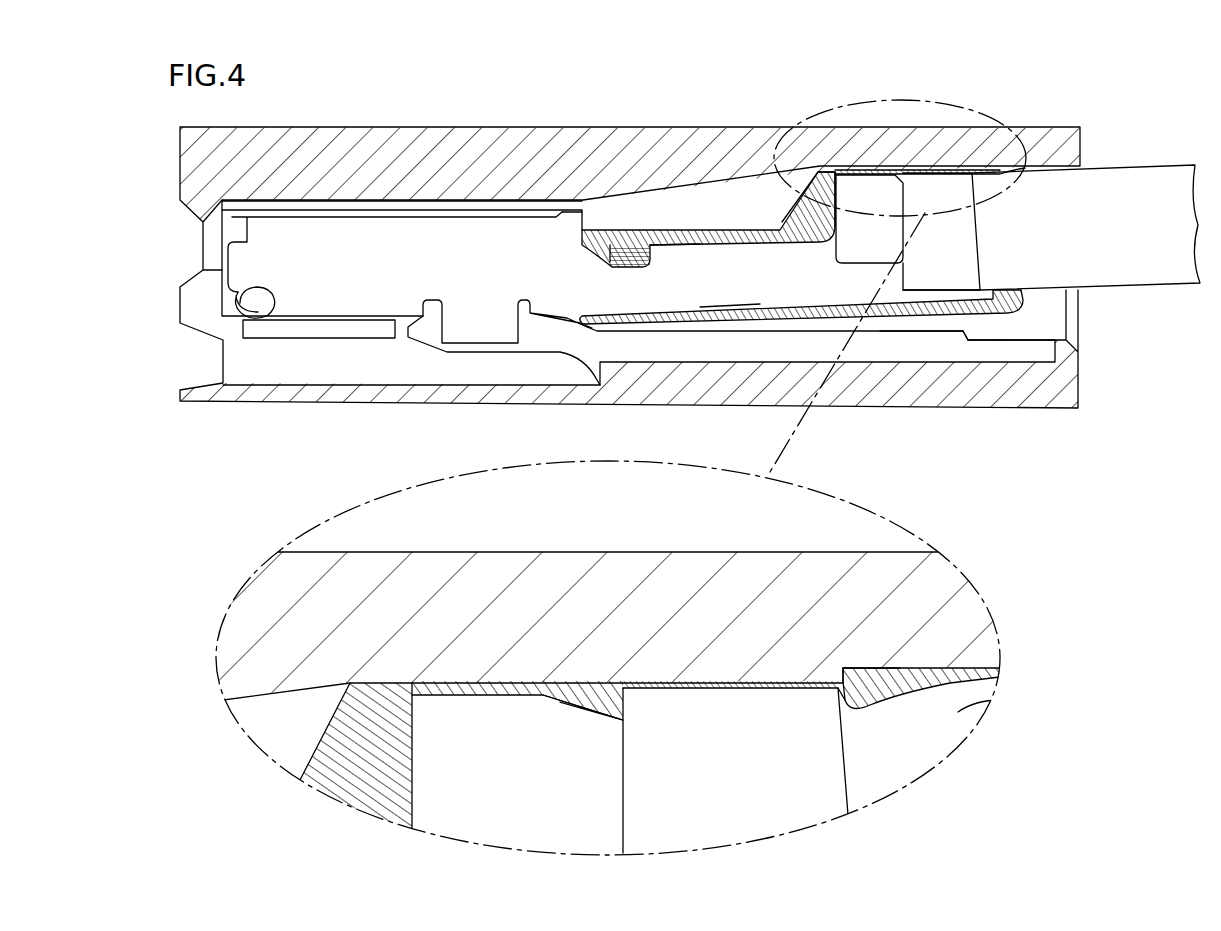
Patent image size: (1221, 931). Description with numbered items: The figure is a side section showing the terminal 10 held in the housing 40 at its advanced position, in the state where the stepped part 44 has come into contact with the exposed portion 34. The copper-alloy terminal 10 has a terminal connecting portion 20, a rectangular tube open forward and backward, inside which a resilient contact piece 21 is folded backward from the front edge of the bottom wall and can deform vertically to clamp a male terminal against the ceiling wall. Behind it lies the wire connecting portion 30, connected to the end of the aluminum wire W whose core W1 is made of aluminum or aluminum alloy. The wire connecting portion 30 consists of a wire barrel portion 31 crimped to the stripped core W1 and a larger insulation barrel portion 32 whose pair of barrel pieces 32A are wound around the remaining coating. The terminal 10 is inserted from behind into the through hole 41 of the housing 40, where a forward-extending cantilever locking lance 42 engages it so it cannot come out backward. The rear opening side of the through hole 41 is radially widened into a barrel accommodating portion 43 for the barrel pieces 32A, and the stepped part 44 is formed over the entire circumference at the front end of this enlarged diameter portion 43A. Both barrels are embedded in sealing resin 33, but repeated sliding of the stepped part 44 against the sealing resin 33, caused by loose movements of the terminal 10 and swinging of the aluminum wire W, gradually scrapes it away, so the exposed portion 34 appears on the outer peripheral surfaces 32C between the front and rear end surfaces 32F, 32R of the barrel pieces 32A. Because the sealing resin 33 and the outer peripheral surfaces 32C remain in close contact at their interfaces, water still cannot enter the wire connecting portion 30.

The terminal 10 is at (660, 212).
The terminal connecting portion 20 is at (353, 232).
The resilient contact piece 21 is at (238, 290).
The wire connecting portion 30 is at (771, 203).
The wire barrel portion 31 is at (705, 260).
The insulation barrel portion 32 is at (938, 193).
The barrel pieces 32A is at (830, 772).
The outer peripheral surfaces 32C is at (700, 685).
The front end surfaces 32F is at (580, 685).
The rear end surfaces 32R is at (860, 688).
The sealing resin 33 is at (819, 187).
The exposed portion 34 is at (820, 683).
The housing 40 is at (497, 153).
The through hole 41 is at (620, 205).
The locking lance 42 is at (536, 343).
The barrel accommodating portion 43 is at (912, 327).
The enlarged diameter portion 43A is at (1018, 330).
The stepped part 44 is at (960, 343).
The aluminum wire W is at (1110, 202).
The core W1 is at (633, 270).